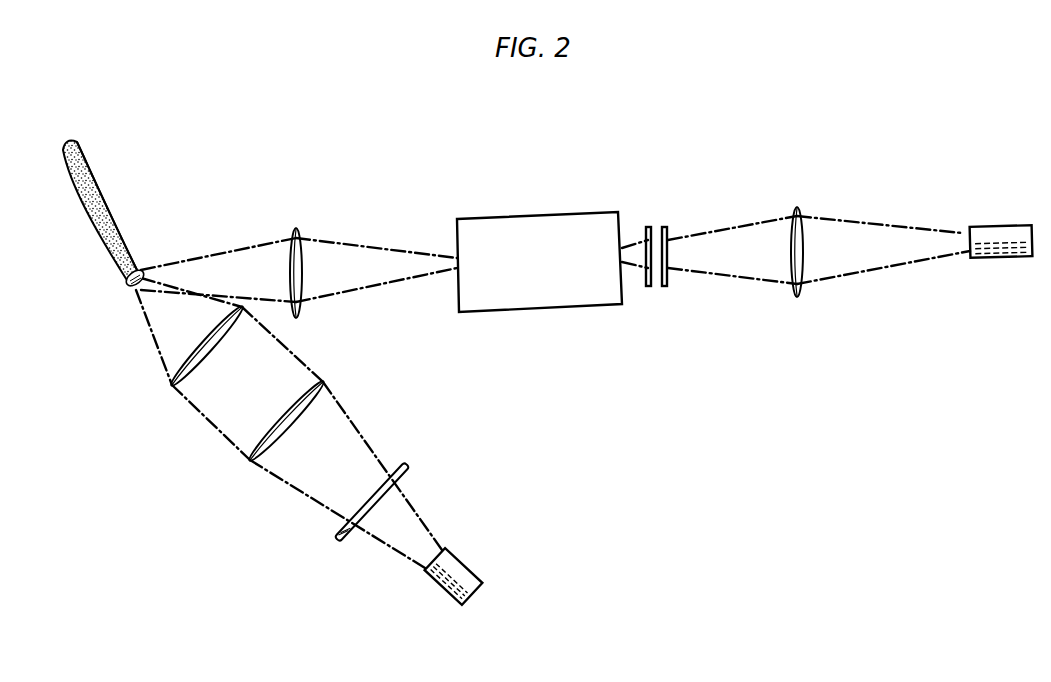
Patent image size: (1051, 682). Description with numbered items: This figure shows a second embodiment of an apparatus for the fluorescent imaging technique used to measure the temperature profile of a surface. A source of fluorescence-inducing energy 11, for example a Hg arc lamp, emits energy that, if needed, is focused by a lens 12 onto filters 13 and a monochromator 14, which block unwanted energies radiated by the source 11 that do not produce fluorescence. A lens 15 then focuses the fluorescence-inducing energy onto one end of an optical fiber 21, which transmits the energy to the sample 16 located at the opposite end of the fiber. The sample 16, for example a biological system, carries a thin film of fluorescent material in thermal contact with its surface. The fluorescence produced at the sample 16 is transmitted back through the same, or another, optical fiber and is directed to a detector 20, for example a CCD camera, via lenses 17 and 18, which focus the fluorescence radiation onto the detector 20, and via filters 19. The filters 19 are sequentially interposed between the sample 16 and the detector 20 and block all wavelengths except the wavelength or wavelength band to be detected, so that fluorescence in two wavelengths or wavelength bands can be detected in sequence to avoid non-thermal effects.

The source of fluorescence-inducing energy 11 is at (994, 228).
The lens 12 is at (798, 212).
The filters 13 is at (651, 226).
The monochromator 14 is at (530, 220).
The lens 15 is at (297, 232).
The sample 16 is at (67, 139).
The lens 17 is at (178, 388).
The lens 18 is at (260, 458).
The filters 19 is at (346, 541).
The detector 20 is at (462, 570).
The optical fiber 21 is at (112, 198).